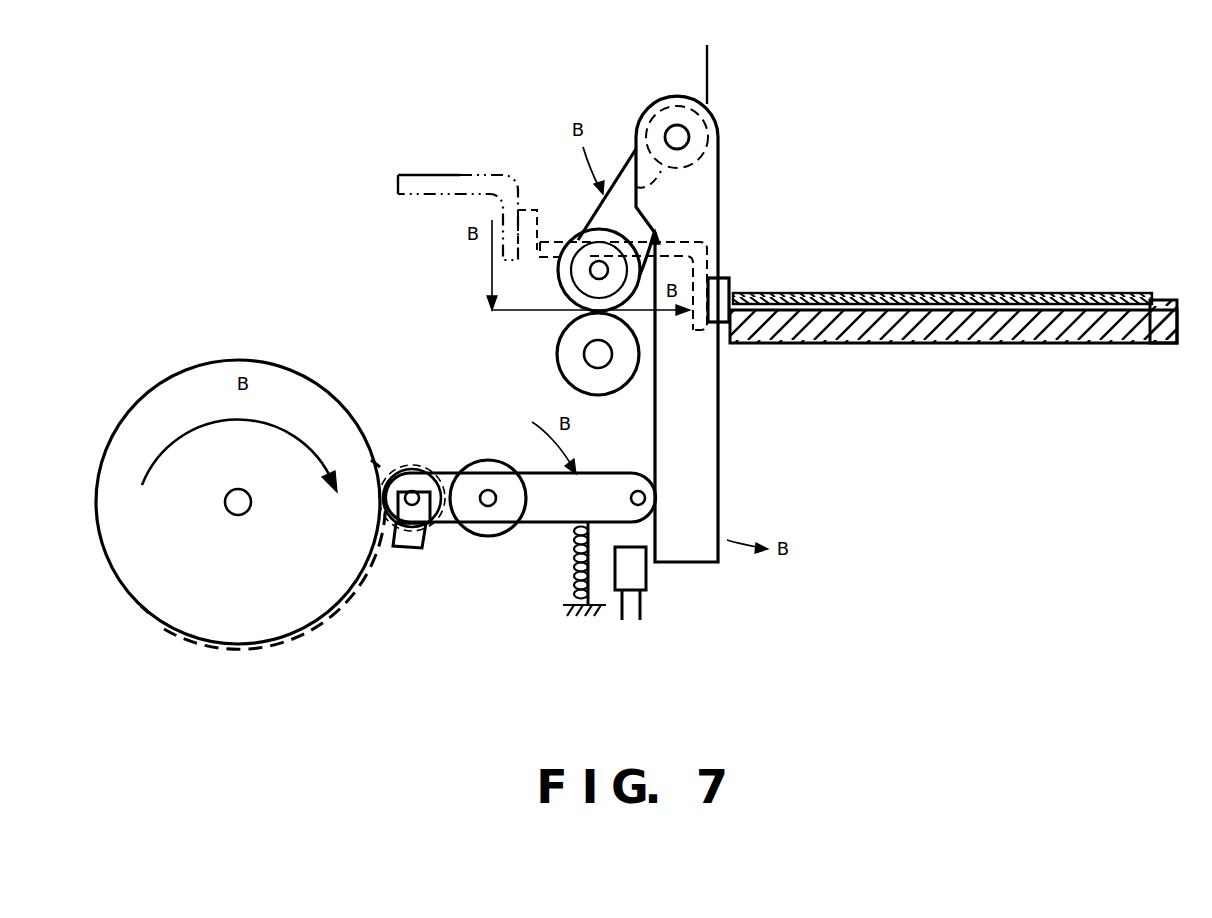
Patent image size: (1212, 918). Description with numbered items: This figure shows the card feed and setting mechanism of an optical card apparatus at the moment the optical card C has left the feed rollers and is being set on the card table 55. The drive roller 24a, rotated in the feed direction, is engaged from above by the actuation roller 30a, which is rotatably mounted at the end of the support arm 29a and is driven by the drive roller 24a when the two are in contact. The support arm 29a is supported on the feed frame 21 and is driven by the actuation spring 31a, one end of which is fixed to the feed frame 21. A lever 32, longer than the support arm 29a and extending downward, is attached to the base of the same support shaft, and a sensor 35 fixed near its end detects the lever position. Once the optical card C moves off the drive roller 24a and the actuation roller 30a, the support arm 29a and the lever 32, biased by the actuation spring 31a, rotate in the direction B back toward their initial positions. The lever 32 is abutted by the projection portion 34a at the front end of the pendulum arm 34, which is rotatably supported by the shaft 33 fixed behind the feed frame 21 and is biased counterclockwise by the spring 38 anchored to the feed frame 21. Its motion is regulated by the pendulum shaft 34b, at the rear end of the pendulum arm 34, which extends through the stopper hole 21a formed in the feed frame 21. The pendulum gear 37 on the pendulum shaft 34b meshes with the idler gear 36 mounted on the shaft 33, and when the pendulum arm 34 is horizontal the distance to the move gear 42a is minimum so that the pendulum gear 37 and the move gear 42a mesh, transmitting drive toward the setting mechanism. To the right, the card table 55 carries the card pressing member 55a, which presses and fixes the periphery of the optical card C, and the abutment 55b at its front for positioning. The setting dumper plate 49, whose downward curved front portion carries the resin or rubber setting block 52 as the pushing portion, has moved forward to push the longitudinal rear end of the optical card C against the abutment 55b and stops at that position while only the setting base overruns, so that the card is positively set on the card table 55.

The actuation spring 31a is at (707, 72).
The setting dumper plate 49 is at (544, 244).
The support arm 29a is at (634, 235).
The actuation roller 30a is at (557, 270).
The drive roller 24a is at (555, 354).
The setting block 52 is at (730, 276).
The card table 55 is at (1093, 343).
The card pressing member 55a is at (1052, 292).
The abutment 55b is at (1165, 300).
The optical card C is at (940, 293).
The lever 32 is at (703, 413).
The pendulum arm 34 is at (550, 510).
The projection portion 34a is at (646, 497).
The pendulum shaft 34b is at (410, 492).
The shaft 33 is at (488, 490).
The stopper hole 21a is at (417, 550).
The pendulum gear 37 is at (391, 562).
The idler gear 36 is at (482, 537).
The spring 38 is at (575, 580).
The feed frame 21 is at (598, 614).
The sensor 35 is at (638, 573).
The move gear 42a is at (216, 630).